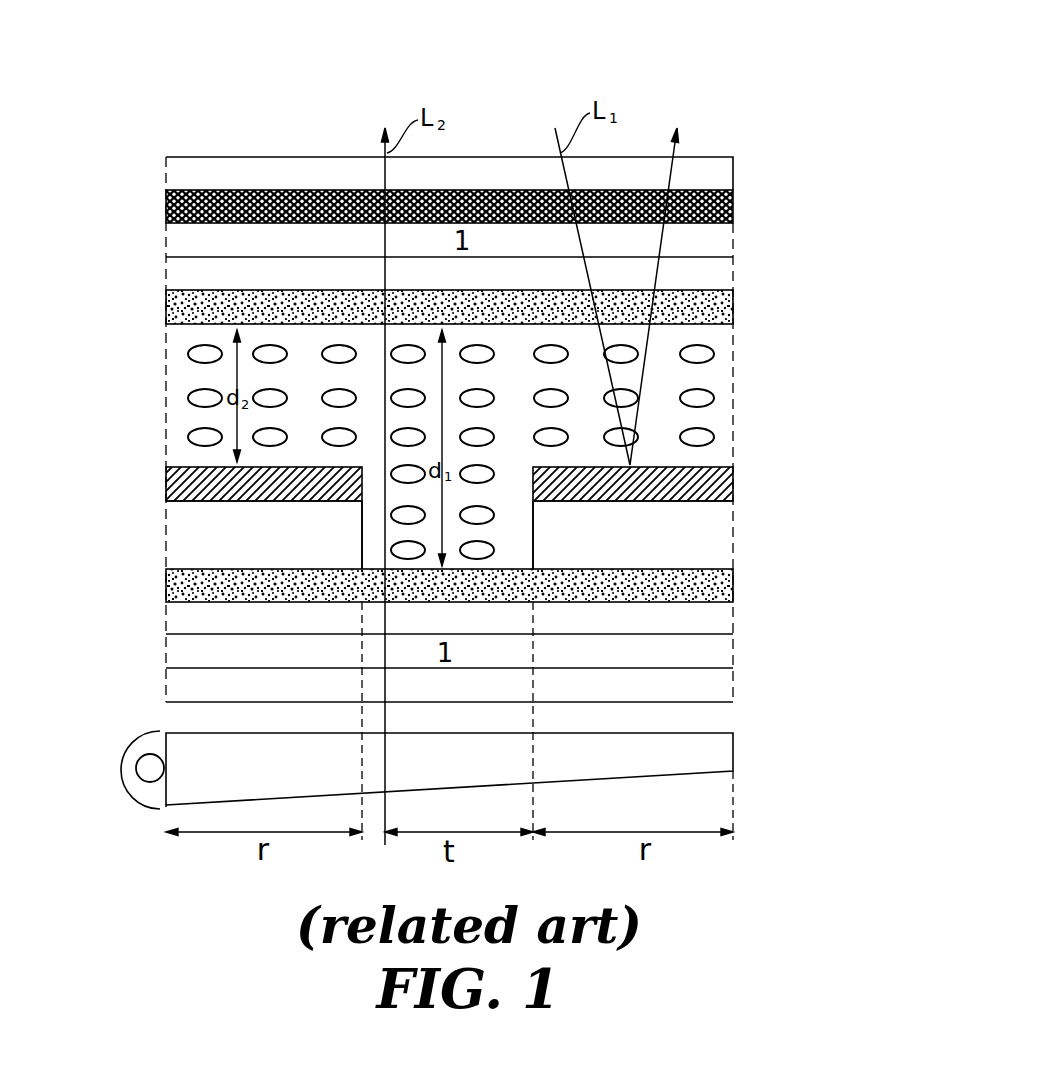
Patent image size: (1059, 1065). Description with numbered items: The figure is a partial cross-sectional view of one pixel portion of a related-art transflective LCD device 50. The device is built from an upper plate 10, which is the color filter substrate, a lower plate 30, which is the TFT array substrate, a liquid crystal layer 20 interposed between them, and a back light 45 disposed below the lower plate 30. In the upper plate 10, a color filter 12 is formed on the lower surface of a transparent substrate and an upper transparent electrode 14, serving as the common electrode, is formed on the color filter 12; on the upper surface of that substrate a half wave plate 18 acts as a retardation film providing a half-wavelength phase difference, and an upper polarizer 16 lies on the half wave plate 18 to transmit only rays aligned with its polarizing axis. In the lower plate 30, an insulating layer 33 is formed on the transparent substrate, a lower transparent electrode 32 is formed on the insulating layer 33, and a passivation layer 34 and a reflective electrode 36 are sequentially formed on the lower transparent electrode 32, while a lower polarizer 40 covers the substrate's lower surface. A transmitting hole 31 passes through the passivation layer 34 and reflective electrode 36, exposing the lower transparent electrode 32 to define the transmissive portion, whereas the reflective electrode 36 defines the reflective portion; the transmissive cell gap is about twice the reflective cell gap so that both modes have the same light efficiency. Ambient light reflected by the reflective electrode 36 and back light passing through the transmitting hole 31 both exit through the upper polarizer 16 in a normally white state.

The upper plate 10 is at (150, 155).
The color filter 12 is at (700, 275).
The upper transparent electrode 14 is at (733, 310).
The upper polarizer 16 is at (710, 176).
The half wave plate 18 is at (733, 207).
The liquid crystal layer 20 is at (150, 325).
The lower plate 30 is at (150, 465).
The transmitting hole 31 is at (508, 560).
The lower transparent electrode 32 is at (715, 590).
The insulating layer 33 is at (720, 620).
The passivation layer 34 is at (710, 537).
The reflective electrode 36 is at (707, 490).
The lower polarizer 40 is at (710, 688).
The back light 45 is at (720, 754).
The transflective LCD device 50 is at (768, 90).